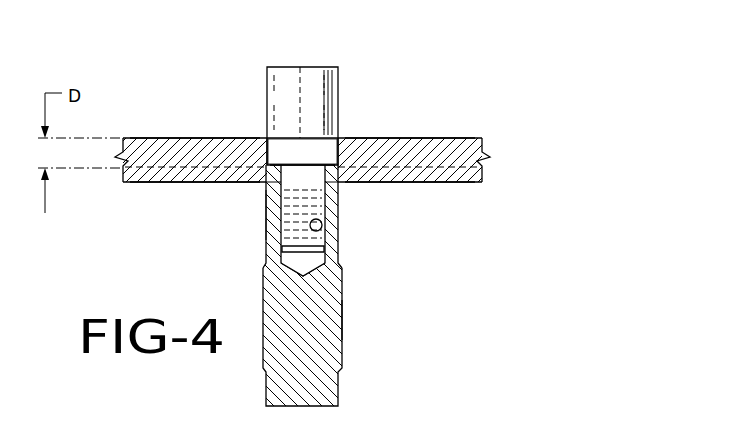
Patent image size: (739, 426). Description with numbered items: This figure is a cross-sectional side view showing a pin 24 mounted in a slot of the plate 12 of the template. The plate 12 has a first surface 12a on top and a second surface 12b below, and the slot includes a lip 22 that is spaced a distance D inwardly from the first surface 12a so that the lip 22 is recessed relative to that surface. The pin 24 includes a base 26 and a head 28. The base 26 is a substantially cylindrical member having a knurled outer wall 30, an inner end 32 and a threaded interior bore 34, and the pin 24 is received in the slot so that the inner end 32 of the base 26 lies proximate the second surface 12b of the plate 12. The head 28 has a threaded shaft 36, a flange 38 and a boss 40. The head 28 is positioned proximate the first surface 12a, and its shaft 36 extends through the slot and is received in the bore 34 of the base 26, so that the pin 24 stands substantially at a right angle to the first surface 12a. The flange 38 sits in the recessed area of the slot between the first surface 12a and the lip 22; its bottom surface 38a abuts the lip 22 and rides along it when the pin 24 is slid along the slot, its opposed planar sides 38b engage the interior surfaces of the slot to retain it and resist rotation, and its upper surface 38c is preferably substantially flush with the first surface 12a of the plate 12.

The plate 12 is at (148, 135).
The first surface 12a is at (458, 137).
The second surface 12b is at (445, 182).
The lip 22 is at (328, 178).
The pin 24 is at (314, 65).
The base 26 is at (344, 292).
The head 28 is at (340, 73).
The knurled outer wall 30 is at (343, 318).
The inner end 32 is at (266, 186).
The threaded interior bore 34 is at (322, 225).
The threaded shaft 36 is at (268, 232).
The flange 38 is at (267, 100).
The bottom surface 38a is at (283, 224).
The opposed planar sides 38b is at (266, 153).
The upper surface 38c is at (308, 137).
The boss 40 is at (297, 77).